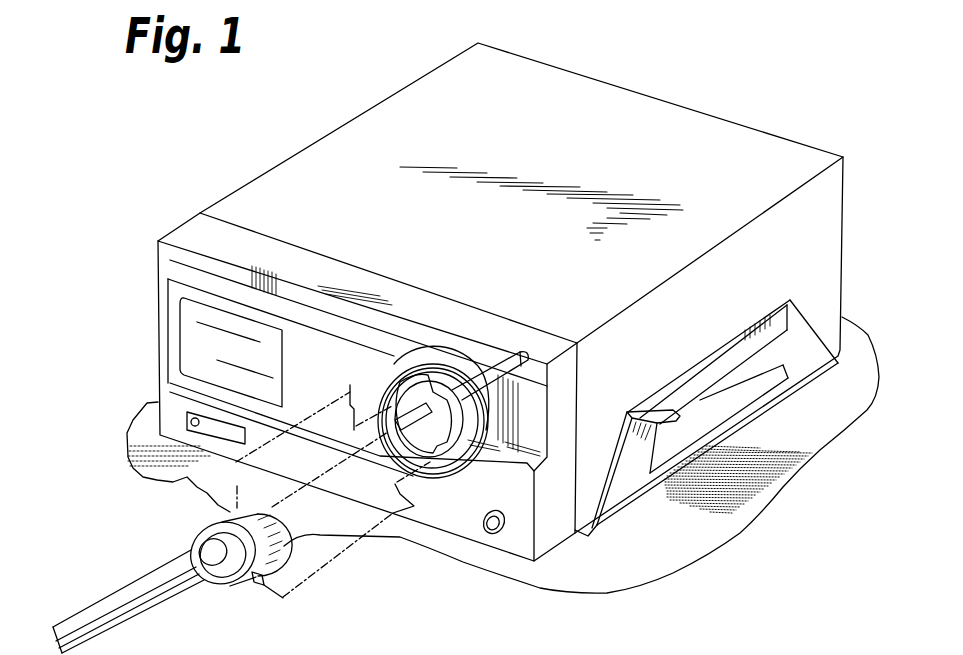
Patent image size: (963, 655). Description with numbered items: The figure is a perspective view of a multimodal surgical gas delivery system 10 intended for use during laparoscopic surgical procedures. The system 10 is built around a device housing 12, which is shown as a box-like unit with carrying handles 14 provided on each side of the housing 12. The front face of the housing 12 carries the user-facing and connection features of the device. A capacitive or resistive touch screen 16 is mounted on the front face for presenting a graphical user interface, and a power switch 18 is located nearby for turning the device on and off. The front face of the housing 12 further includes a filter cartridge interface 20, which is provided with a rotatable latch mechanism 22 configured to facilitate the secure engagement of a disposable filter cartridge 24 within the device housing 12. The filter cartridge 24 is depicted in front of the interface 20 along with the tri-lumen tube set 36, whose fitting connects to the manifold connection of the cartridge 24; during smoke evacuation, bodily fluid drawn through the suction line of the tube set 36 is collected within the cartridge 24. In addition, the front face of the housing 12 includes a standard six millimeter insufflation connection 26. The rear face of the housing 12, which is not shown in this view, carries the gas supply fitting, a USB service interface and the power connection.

The surgical gas delivery system 10 is at (154, 211).
The device housing 12 is at (662, 124).
The carrying handles 14 is at (713, 362).
The touch screen 16 is at (183, 322).
The power switch 18 is at (213, 432).
The filter cartridge interface 20 is at (396, 372).
The rotatable latch mechanism 22 is at (481, 368).
The disposable filter cartridge 24 is at (284, 546).
The insufflation connection 26 is at (489, 532).
The tri-lumen tube set 36 is at (103, 592).